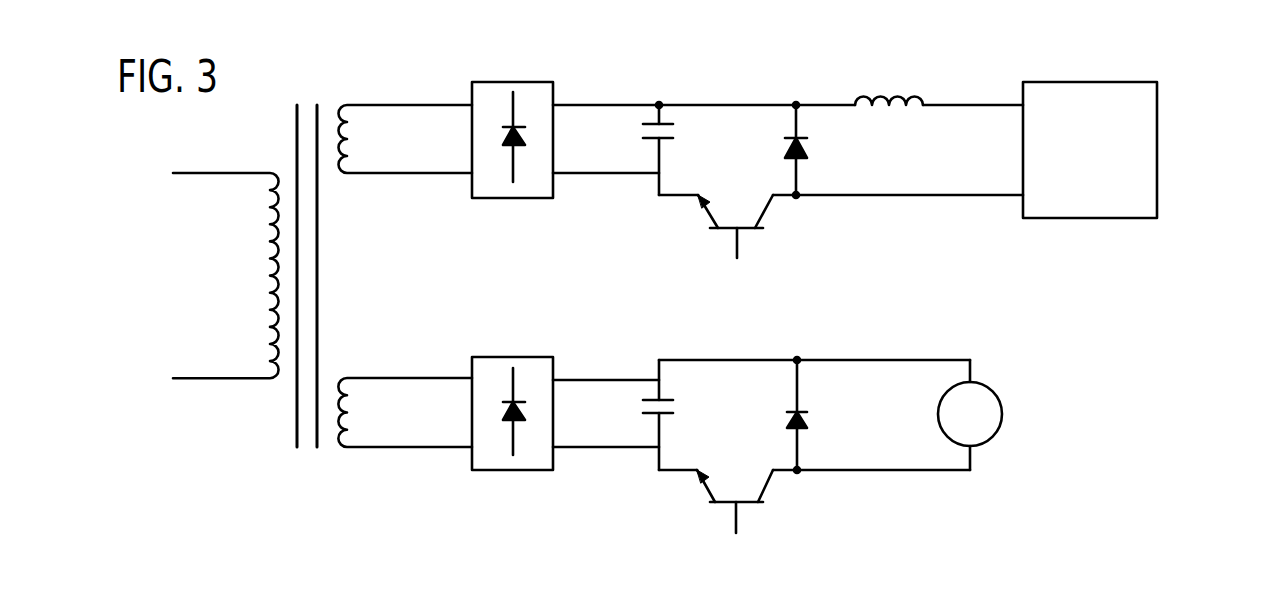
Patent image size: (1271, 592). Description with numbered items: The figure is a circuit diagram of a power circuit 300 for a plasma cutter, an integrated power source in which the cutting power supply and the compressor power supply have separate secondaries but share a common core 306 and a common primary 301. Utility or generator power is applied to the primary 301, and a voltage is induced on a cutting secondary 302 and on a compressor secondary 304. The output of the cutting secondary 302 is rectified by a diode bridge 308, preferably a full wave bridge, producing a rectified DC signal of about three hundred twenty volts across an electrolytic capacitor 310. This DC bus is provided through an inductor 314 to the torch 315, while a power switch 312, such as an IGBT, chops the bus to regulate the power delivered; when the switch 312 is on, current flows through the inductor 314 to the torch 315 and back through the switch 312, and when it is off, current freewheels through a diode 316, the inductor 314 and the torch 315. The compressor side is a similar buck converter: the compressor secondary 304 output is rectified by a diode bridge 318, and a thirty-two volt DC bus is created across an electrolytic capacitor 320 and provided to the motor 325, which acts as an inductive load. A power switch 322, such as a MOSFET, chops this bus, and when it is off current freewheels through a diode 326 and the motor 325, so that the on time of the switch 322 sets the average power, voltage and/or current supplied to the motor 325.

The power circuit 300 is at (746, 58).
The primary 301 is at (273, 288).
The cutting secondary 302 is at (348, 153).
The compressor secondary 304 is at (344, 405).
The core 306 is at (304, 102).
The diode bridge 308 is at (514, 82).
The electrolytic capacitor 310 is at (678, 133).
The power switch 312 is at (740, 245).
The inductor 314 is at (880, 97).
The torch 315 is at (1158, 145).
The diode 316 is at (808, 152).
The diode bridge 318 is at (514, 357).
The electrolytic capacitor 320 is at (678, 408).
The power switch 322 is at (762, 497).
The motor 325 is at (1003, 413).
The diode 326 is at (808, 422).